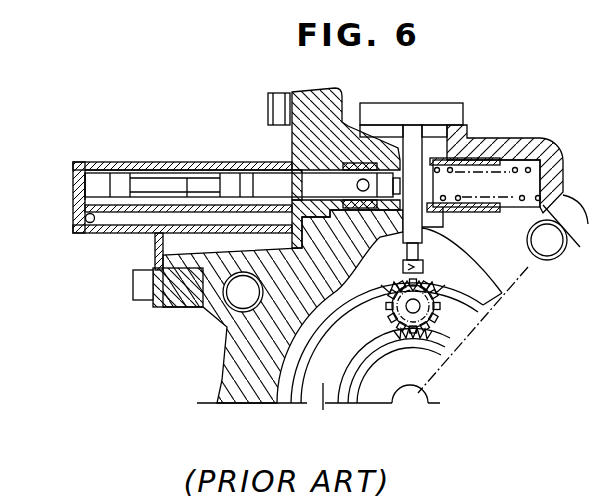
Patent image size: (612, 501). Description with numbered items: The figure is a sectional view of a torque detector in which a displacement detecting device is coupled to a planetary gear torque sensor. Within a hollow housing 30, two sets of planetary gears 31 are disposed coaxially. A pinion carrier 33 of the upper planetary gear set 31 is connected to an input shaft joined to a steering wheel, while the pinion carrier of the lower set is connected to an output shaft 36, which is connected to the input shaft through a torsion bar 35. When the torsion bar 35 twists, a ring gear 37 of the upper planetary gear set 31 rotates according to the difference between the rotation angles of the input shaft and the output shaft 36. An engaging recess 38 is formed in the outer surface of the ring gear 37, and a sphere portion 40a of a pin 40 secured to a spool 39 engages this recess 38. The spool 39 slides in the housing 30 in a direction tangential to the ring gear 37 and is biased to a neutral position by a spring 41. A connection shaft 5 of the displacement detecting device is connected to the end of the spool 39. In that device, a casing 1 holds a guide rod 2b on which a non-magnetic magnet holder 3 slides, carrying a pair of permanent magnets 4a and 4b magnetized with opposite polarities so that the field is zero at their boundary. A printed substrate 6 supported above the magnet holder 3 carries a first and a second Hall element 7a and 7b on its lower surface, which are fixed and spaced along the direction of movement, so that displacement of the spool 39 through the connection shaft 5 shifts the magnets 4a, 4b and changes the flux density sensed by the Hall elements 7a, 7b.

The casing 1 is at (73, 182).
The guide rod 2b is at (101, 170).
The magnet holder 3 is at (247, 188).
The permanent magnet 4a is at (145, 192).
The permanent magnet 4b is at (205, 190).
The connection shaft 5 is at (336, 183).
The printed substrate 6 is at (77, 237).
The first Hall element 7a is at (193, 204).
The second Hall element 7b is at (178, 204).
The hollow housing 30 is at (227, 360).
The planetary gear set 31 is at (467, 321).
The pinion carrier 33 is at (414, 308).
The torsion bar 35 is at (416, 392).
The output shaft 36 is at (326, 413).
The ring gear 37 is at (481, 284).
The engaging recess 38 is at (426, 264).
The spool 39 is at (478, 160).
The pin 40 is at (425, 218).
The sphere portion 40a is at (503, 292).
The spring 41 is at (514, 167).